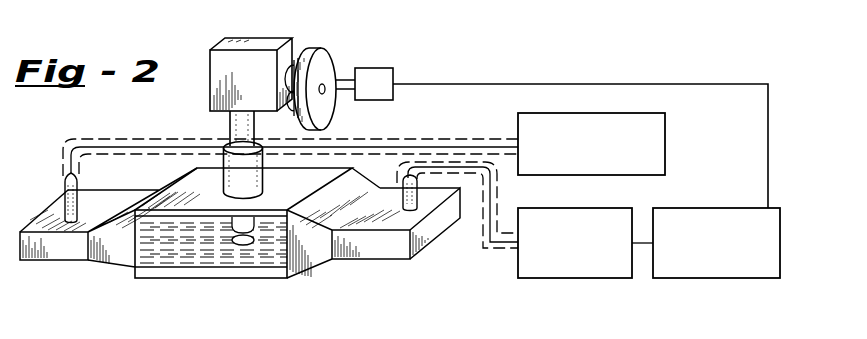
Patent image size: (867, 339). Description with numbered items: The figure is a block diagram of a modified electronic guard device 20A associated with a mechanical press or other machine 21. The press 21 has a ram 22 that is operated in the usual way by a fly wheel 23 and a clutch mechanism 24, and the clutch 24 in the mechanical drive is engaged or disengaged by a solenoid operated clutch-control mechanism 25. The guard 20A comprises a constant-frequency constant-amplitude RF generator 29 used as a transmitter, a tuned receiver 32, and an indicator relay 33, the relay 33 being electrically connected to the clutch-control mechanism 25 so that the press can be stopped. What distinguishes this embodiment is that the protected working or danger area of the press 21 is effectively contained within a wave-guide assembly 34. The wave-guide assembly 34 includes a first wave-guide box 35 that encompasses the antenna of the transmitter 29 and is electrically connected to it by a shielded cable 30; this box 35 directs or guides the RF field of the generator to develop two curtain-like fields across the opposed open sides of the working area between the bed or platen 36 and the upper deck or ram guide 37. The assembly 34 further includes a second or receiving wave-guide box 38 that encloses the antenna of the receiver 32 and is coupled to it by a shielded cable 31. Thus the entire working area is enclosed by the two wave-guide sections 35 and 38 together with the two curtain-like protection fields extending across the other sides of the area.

The electronic guard device 20A is at (493, 80).
The machine 21 is at (208, 80).
The ram 22 is at (231, 128).
The fly wheel 23 is at (322, 67).
The clutch mechanism 24 is at (296, 66).
The solenoid operated clutch-control mechanism 25 is at (378, 72).
The RF generator 29 is at (652, 126).
The shielded cable 30 is at (435, 141).
The shielded cable 31 is at (503, 246).
The tuned receiver 32 is at (560, 270).
The indicator relay 33 is at (707, 269).
The wave-guide assembly 34 is at (117, 268).
The first wave-guide box 35 is at (65, 253).
The bed or platen 36 is at (217, 276).
The upper deck or ram guide 37 is at (282, 199).
The second or receiving wave-guide box 38 is at (383, 249).